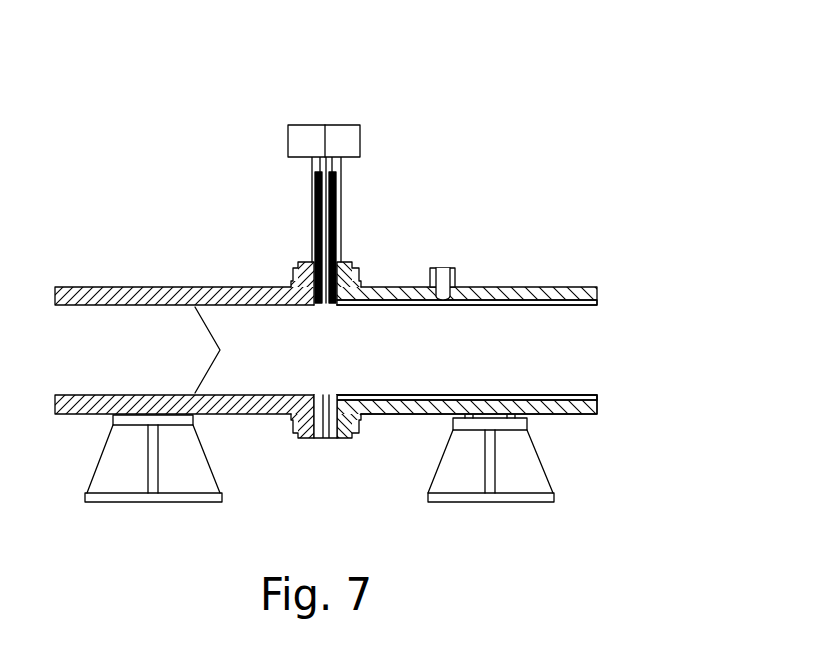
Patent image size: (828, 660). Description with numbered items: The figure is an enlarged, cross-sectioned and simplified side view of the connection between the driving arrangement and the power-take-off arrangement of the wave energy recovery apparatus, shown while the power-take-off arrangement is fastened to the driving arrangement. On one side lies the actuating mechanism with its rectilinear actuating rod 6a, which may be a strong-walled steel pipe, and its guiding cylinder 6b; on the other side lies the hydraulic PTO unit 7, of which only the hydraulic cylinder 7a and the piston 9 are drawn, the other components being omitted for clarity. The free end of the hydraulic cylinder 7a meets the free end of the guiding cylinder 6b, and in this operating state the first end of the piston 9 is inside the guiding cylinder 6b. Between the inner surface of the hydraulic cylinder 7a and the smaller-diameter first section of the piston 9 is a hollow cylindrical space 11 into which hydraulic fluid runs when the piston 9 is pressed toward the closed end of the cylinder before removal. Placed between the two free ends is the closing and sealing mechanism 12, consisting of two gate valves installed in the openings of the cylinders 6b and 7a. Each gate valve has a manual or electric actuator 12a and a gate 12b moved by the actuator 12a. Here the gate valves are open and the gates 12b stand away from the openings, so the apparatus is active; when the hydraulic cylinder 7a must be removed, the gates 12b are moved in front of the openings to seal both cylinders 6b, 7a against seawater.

The actuating rod 6a is at (150, 320).
The guiding cylinder 6b is at (77, 293).
The hydraulic PTO unit 7 is at (571, 153).
The hydraulic cylinder 7a is at (587, 288).
The piston 9 is at (530, 318).
The hollow cylindrical space 11 is at (578, 398).
The closing and sealing mechanism 12 is at (351, 226).
The actuator 12a is at (305, 132).
The gate 12b is at (313, 198).